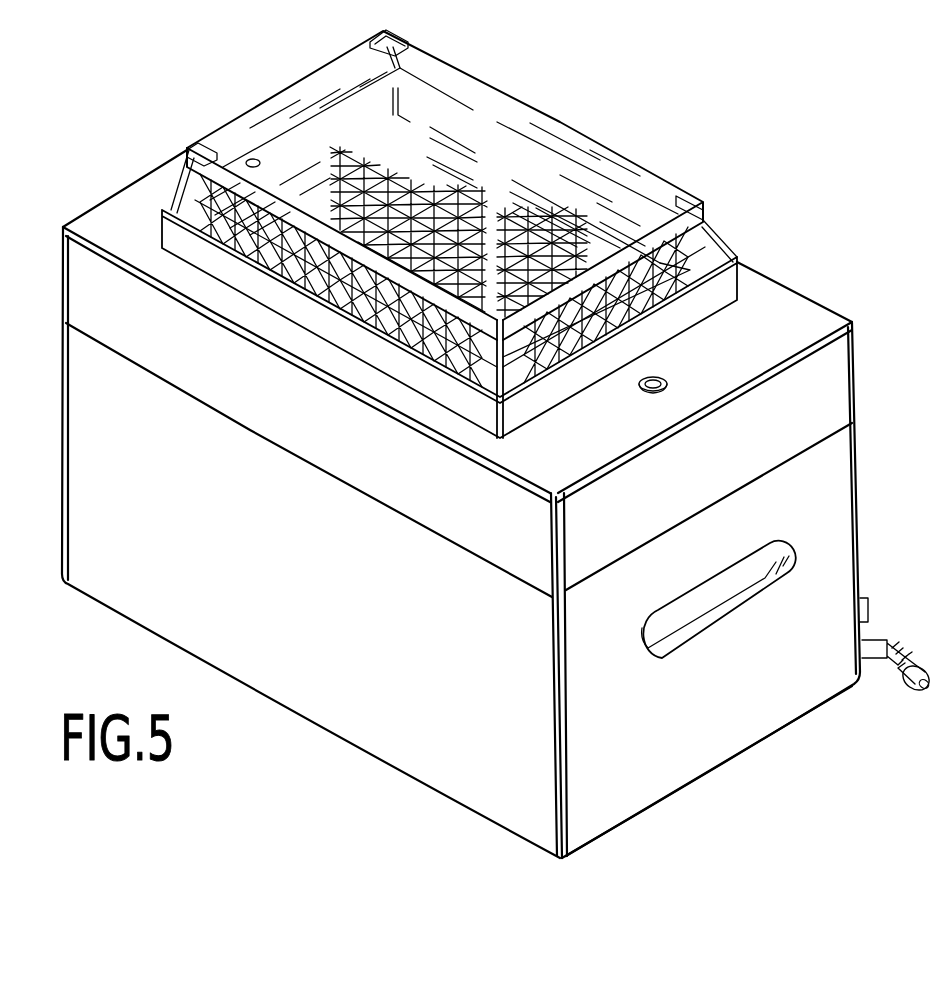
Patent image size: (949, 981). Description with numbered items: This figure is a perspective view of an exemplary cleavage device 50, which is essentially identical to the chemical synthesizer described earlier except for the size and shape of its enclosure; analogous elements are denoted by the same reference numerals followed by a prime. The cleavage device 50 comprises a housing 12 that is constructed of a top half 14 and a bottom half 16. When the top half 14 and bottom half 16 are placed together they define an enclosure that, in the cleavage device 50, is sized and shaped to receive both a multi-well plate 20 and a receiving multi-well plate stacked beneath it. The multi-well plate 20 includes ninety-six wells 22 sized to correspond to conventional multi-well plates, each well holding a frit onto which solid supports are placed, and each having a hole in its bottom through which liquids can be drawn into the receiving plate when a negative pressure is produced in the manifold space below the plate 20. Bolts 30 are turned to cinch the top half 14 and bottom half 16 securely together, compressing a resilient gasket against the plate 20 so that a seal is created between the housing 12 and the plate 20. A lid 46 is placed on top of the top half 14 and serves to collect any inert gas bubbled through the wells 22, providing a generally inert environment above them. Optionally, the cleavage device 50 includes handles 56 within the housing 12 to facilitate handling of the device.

The housing 12 is at (869, 272).
The top half 14 is at (904, 352).
The bottom half 16 is at (838, 548).
The multi-well plate 20 is at (440, 350).
The wells 22 is at (565, 258).
The bolts 30 is at (721, 333).
The lid 46 is at (532, 27).
The cleavage device 50 is at (606, 134).
The handles 56 is at (697, 620).